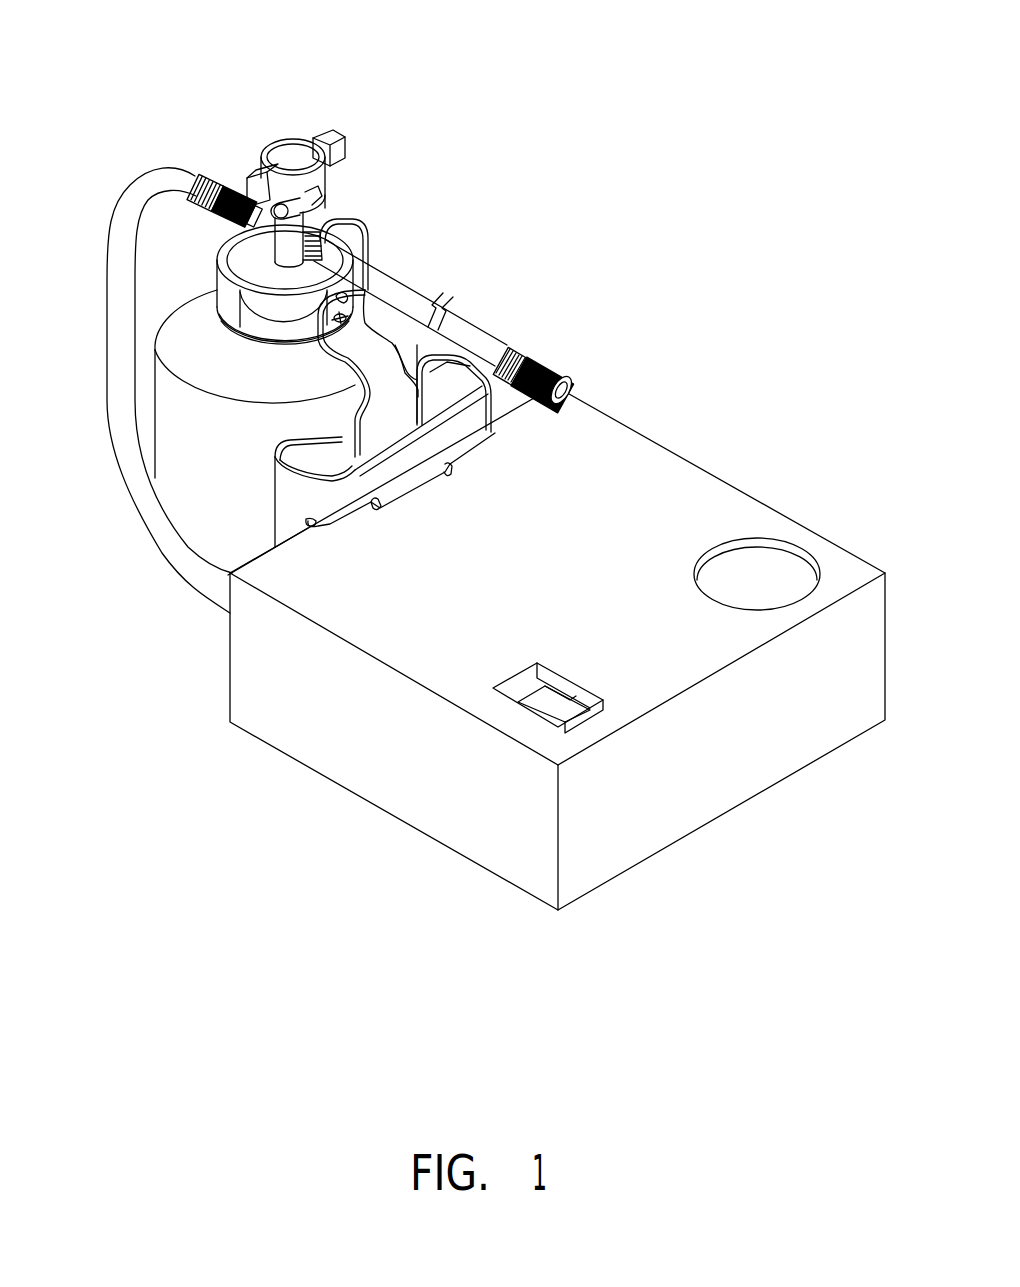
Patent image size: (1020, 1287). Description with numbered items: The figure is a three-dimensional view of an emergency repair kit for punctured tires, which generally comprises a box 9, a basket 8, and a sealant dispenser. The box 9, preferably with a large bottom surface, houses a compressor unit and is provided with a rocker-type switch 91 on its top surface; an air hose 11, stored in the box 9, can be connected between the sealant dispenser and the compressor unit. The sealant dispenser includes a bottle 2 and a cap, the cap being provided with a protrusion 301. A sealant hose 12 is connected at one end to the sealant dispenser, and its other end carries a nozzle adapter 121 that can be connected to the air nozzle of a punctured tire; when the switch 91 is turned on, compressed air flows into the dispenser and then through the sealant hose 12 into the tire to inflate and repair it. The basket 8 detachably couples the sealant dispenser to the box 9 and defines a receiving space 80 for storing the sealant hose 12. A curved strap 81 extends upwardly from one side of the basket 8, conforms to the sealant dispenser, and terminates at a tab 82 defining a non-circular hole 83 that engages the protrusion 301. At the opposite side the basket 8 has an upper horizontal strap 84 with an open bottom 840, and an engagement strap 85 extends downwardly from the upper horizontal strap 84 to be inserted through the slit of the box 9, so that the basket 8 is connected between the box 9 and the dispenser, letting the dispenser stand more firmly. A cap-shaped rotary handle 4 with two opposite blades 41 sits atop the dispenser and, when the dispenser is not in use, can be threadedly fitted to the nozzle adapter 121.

The bottle 2 is at (173, 433).
The rotary handle 4 is at (293, 152).
The blades 41 is at (337, 152).
The air hose 11 is at (162, 182).
The sealant hose 12 is at (417, 307).
The nozzle adapter 121 is at (547, 364).
The protrusion 301 is at (345, 295).
The receiving space 80 is at (453, 387).
The tab 82 is at (352, 243).
The non-circular hole 83 is at (333, 322).
The curved strap 81 is at (298, 503).
The basket 8 is at (414, 527).
The upper horizontal strap 84 is at (455, 438).
The open bottom 840 is at (290, 540).
The engagement strap 85 is at (398, 492).
The box 9 is at (747, 767).
The rocker-type switch 91 is at (550, 712).